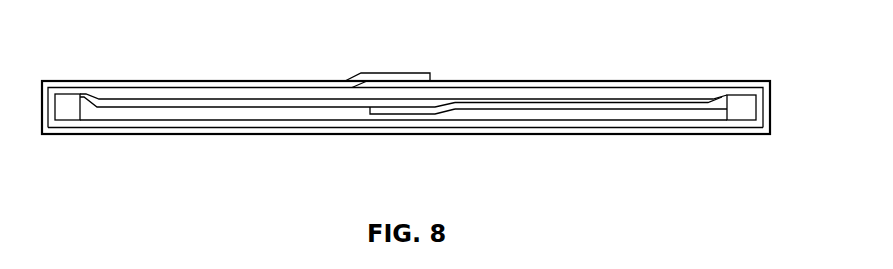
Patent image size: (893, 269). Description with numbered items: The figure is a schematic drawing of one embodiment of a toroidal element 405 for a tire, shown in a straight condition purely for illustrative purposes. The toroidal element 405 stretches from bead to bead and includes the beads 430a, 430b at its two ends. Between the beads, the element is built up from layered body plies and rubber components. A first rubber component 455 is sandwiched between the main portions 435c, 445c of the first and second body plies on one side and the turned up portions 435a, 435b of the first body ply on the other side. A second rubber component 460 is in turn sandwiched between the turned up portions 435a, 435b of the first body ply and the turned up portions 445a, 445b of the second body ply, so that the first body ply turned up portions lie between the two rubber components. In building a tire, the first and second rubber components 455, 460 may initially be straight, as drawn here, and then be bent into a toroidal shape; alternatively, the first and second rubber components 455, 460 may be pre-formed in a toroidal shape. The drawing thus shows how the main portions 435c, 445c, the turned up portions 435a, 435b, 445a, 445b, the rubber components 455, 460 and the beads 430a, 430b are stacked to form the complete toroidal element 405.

The toroidal element 405 is at (701, 41).
The second rubber component 460 is at (615, 94).
The turned up portion of the first body ply 435a is at (458, 80).
The turned up portion of the first body ply 435b is at (218, 85).
The main portion of the first body ply 435c is at (462, 131).
The bead 430a is at (741, 118).
The bead 430b is at (62, 113).
The turned up portion of the second body ply 445a is at (528, 97).
The turned up portion of the second body ply 445b is at (283, 96).
The main portion of the second body ply 445c is at (258, 121).
The first rubber component 455 is at (362, 113).